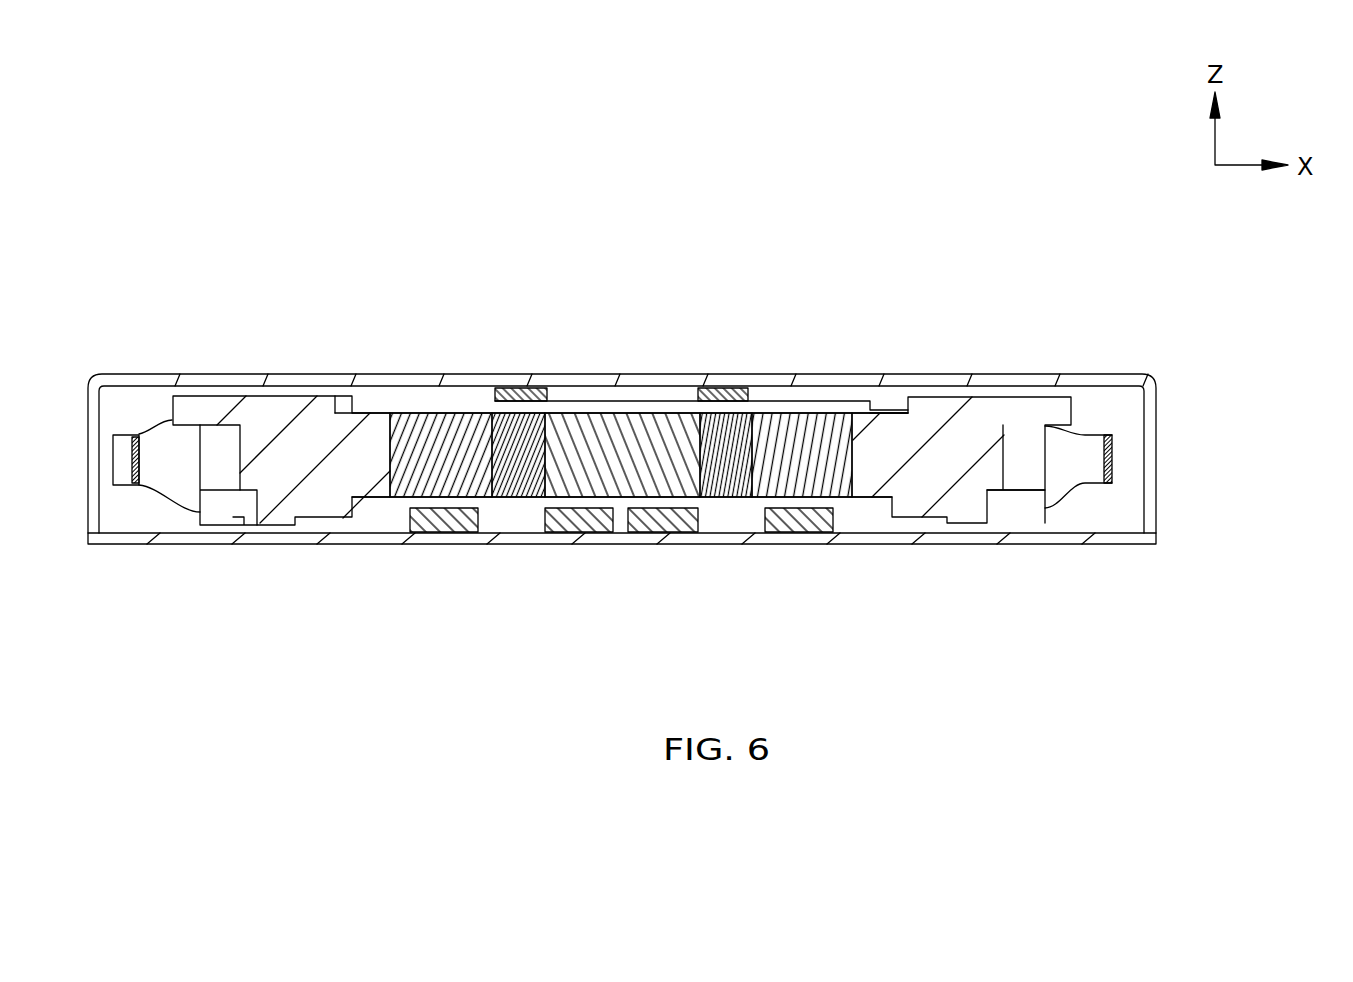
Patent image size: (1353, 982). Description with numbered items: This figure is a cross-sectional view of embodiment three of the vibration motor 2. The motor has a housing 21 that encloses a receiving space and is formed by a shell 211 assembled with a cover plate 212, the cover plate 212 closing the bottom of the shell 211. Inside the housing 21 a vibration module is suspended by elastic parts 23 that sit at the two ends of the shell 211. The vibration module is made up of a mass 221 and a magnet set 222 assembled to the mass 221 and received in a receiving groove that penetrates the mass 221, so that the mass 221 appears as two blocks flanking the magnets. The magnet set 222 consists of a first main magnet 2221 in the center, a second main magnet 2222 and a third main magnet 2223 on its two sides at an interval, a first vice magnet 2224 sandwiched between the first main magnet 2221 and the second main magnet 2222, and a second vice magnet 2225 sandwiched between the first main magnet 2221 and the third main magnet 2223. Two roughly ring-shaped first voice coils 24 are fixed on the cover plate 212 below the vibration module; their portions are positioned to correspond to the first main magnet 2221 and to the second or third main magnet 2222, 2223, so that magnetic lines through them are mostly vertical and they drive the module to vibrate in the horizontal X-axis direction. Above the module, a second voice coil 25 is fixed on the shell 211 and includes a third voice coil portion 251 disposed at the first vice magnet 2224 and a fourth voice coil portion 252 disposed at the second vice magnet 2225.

The vibration motor 2 is at (700, 405).
The housing 21 is at (700, 479).
The shell 211 is at (1150, 408).
The cover plate 212 is at (670, 558).
The mass 221 is at (960, 487).
The magnet set 222 is at (621, 550).
The first main magnet 2221 is at (568, 480).
The second main magnet 2222 is at (787, 519).
The third main magnet 2223 is at (413, 483).
The first vice magnet 2224 is at (742, 430).
The second vice magnet 2225 is at (513, 470).
The elastic parts 23 is at (124, 474).
The first voice coils 24 is at (817, 520).
The second voice coil 25 is at (701, 326).
The third voice coil portion 251 is at (724, 346).
The fourth voice coil portion 252 is at (503, 390).